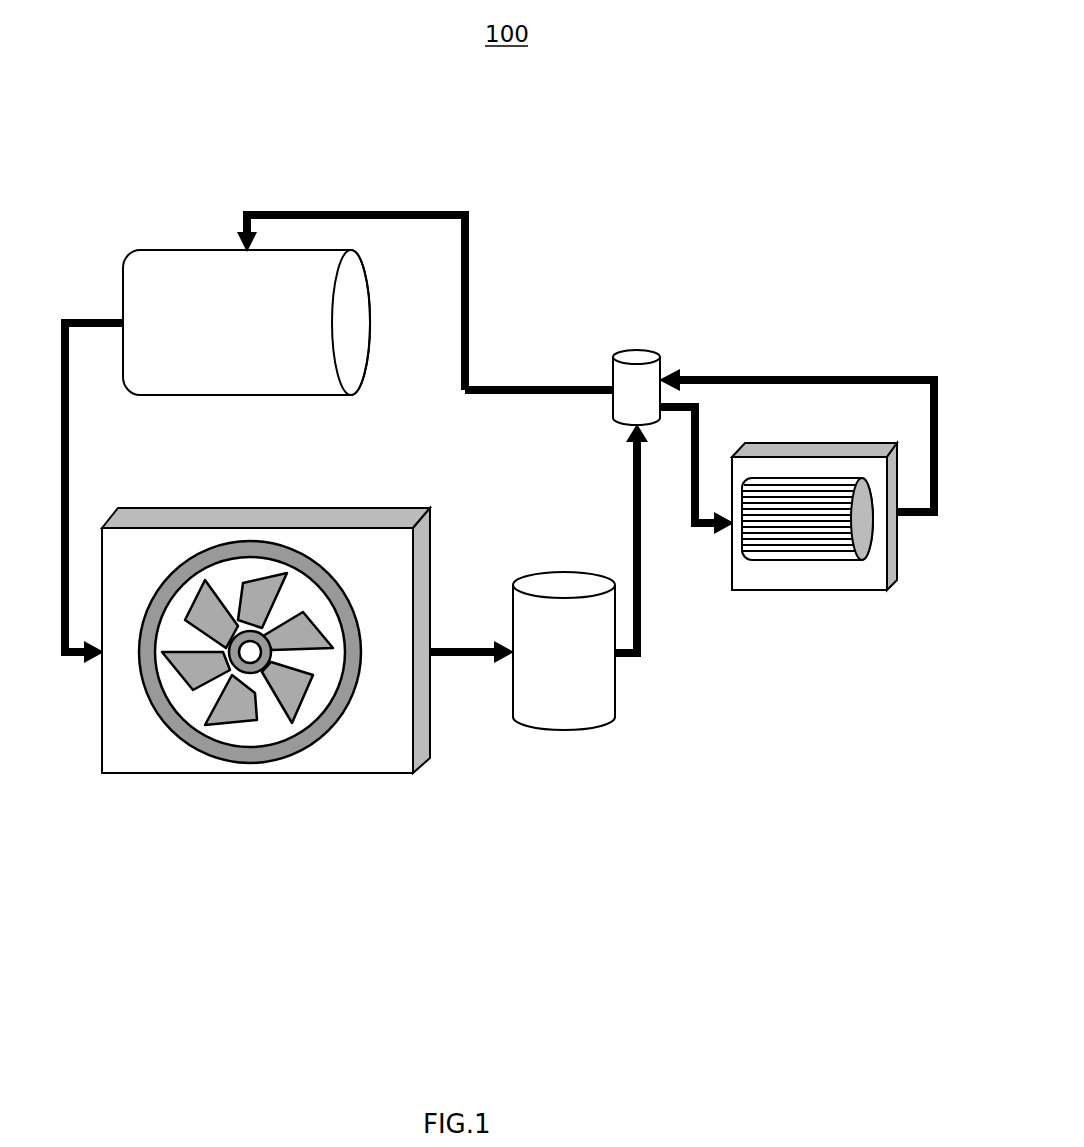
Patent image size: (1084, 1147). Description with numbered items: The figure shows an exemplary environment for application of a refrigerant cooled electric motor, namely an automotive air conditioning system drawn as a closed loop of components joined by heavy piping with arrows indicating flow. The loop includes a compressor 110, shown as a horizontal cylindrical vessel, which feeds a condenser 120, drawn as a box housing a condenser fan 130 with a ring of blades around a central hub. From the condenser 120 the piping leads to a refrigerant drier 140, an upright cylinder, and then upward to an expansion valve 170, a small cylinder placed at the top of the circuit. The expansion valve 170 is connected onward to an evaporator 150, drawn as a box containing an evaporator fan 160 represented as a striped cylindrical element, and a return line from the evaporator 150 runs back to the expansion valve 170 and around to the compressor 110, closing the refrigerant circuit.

The compressor 110 is at (246, 322).
The condenser 120 is at (137, 785).
The condenser fan 130 is at (318, 758).
The refrigerant drier 140 is at (564, 651).
The evaporator 150 is at (868, 422).
The evaporator fan 160 is at (846, 572).
The expansion valve 170 is at (653, 322).